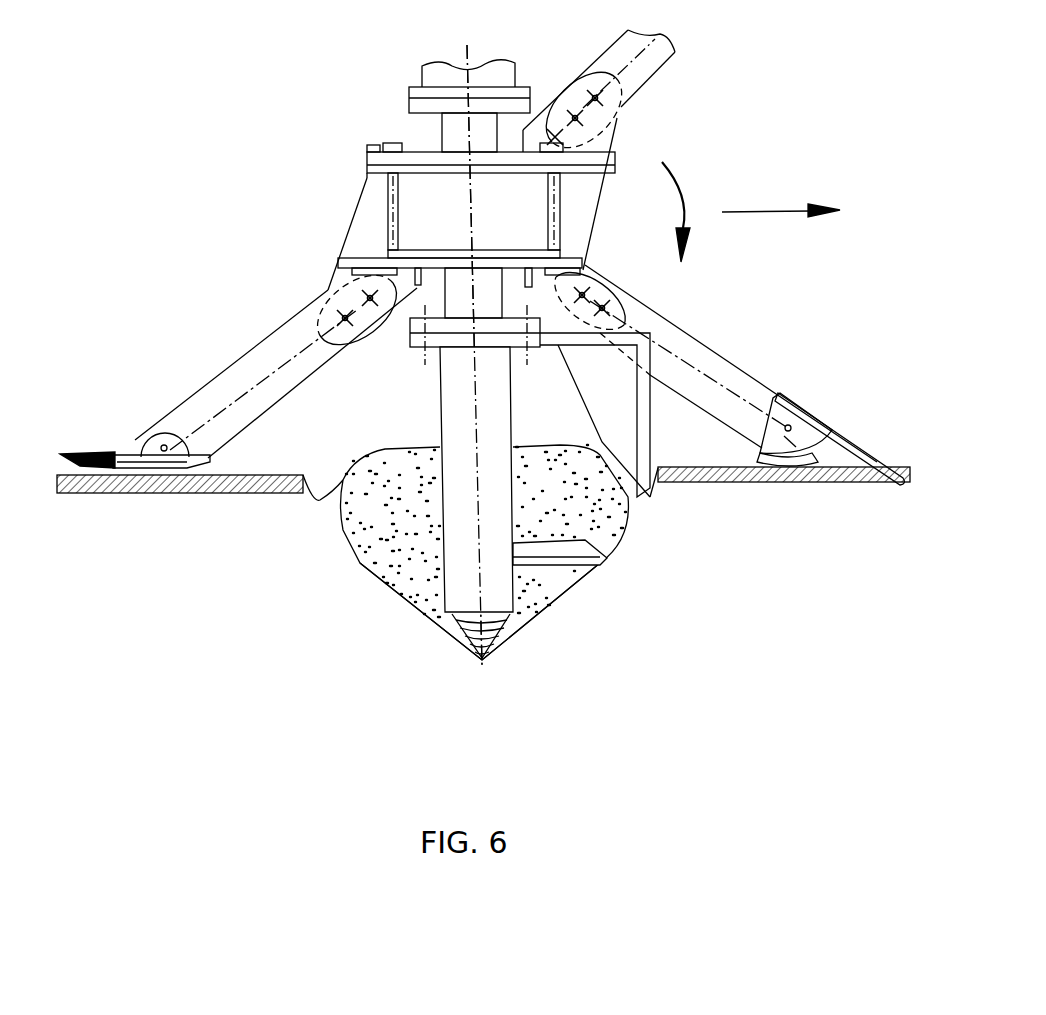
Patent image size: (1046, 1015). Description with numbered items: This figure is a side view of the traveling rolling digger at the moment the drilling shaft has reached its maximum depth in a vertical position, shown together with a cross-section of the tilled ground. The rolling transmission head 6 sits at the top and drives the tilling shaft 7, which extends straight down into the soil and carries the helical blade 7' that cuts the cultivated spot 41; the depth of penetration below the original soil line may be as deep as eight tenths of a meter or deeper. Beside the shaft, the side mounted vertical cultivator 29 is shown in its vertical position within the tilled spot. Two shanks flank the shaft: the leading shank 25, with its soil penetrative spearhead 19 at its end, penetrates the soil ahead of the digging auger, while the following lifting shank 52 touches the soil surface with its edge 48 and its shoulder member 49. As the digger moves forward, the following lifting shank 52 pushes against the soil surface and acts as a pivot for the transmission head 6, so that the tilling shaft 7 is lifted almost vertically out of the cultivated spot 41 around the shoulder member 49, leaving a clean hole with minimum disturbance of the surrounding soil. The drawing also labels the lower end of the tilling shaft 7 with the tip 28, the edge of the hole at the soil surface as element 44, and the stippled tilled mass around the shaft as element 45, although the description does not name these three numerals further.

The rolling transmission head 6 is at (463, 167).
The tilling shaft 7 is at (427, 359).
The helical blade 7' is at (507, 611).
The soil penetrative spearhead 19 is at (105, 452).
The leading shank 25 is at (223, 395).
The screw tip 28 is at (497, 627).
The side mounted vertical cultivator 29 is at (623, 380).
The cultivated spot 41 is at (587, 487).
The excavation edge 44 is at (318, 500).
The concrete footing 45 is at (345, 543).
The edge 48 is at (875, 453).
The shoulder member 49 is at (818, 463).
The following lifting shank 52 is at (735, 380).